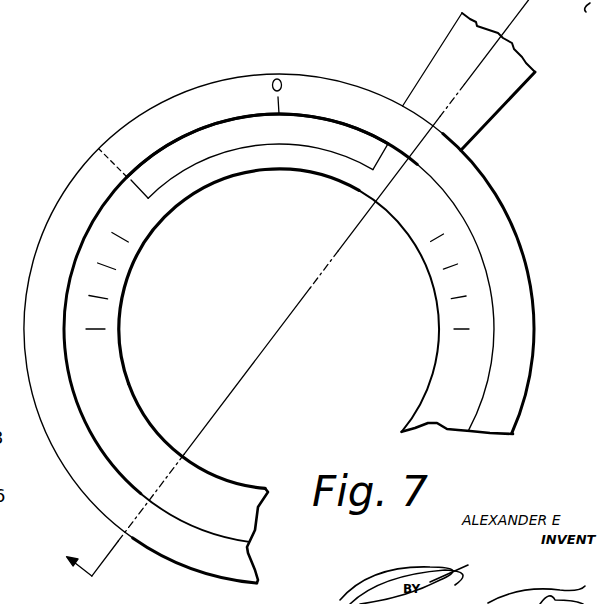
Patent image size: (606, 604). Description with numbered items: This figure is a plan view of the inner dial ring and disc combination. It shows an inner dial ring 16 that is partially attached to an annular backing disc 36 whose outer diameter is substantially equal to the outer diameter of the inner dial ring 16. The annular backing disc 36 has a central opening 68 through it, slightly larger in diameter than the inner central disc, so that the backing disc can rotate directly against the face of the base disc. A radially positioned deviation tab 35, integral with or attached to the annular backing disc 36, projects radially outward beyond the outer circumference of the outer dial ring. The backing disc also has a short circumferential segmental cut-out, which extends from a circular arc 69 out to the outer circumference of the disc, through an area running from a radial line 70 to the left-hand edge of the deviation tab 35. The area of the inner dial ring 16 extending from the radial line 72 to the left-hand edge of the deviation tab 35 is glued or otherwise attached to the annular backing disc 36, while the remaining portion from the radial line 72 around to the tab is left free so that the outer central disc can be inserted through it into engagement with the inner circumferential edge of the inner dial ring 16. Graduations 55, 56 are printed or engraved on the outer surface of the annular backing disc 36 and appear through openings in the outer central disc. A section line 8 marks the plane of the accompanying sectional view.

The section line 8- 8 is at (284, 290).
The inner dial ring 16 is at (518, 372).
The radial tab 35 is at (472, 123).
The annular backing disc 36 is at (143, 225).
The graduations 55 is at (106, 266).
The graduations 56 is at (448, 265).
The central opening 68 is at (137, 395).
The circular arc 69 is at (237, 150).
The radial line 70 is at (135, 181).
The radial line 72 is at (164, 518).